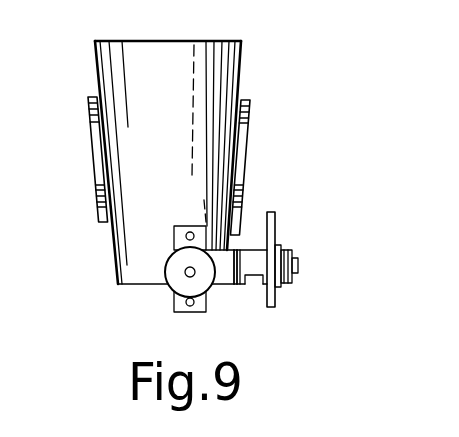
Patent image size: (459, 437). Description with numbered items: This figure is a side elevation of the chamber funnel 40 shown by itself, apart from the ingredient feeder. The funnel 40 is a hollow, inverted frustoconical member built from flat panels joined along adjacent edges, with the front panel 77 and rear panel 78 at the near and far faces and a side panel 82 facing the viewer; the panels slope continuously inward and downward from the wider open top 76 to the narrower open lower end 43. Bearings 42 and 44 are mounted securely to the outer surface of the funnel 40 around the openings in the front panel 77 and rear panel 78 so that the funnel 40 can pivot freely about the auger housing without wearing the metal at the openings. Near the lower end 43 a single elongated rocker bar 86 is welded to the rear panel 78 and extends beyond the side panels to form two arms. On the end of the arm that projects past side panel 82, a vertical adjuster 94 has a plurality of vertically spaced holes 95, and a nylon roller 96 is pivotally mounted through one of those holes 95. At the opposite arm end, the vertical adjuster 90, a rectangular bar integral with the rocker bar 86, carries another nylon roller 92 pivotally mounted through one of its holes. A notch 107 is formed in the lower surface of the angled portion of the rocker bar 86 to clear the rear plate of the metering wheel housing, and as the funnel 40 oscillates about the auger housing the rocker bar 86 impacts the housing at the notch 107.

The chamber funnel 40 is at (179, 151).
The open top 76 is at (140, 57).
The front panel 77 is at (98, 78).
The rear panel 78 is at (243, 88).
The side panel 82 is at (170, 66).
The bearing 42 is at (89, 143).
The bearing 44 is at (248, 142).
The open lower end 43 is at (118, 289).
The vertical adjuster 94 is at (174, 232).
The vertically spaced holes 95 is at (185, 311).
The nylon roller 96 is at (168, 290).
The rocker bar 86 is at (245, 301).
The notch 107 is at (237, 287).
The vertical adjuster 90 is at (276, 213).
The nylon roller 92 is at (286, 243).